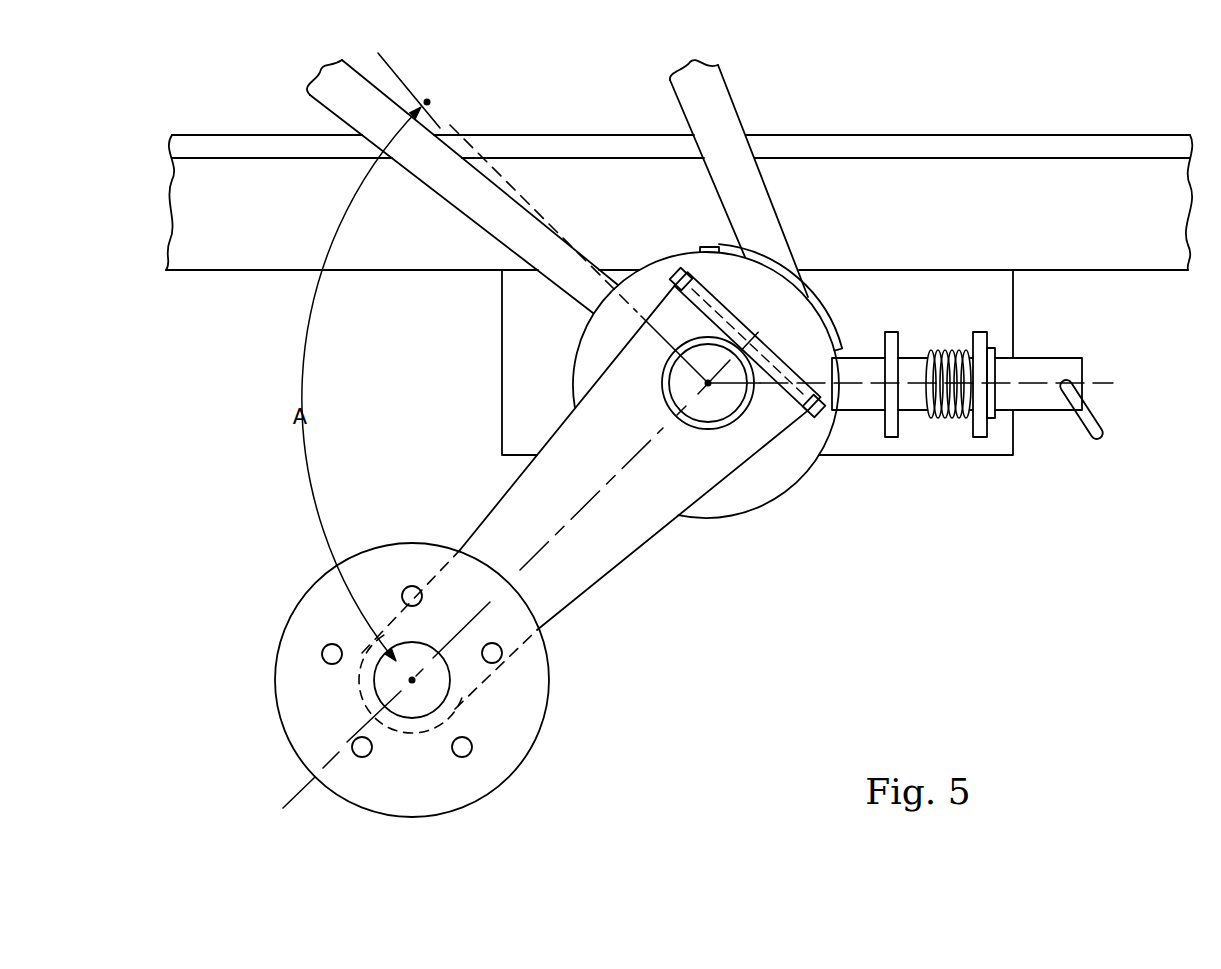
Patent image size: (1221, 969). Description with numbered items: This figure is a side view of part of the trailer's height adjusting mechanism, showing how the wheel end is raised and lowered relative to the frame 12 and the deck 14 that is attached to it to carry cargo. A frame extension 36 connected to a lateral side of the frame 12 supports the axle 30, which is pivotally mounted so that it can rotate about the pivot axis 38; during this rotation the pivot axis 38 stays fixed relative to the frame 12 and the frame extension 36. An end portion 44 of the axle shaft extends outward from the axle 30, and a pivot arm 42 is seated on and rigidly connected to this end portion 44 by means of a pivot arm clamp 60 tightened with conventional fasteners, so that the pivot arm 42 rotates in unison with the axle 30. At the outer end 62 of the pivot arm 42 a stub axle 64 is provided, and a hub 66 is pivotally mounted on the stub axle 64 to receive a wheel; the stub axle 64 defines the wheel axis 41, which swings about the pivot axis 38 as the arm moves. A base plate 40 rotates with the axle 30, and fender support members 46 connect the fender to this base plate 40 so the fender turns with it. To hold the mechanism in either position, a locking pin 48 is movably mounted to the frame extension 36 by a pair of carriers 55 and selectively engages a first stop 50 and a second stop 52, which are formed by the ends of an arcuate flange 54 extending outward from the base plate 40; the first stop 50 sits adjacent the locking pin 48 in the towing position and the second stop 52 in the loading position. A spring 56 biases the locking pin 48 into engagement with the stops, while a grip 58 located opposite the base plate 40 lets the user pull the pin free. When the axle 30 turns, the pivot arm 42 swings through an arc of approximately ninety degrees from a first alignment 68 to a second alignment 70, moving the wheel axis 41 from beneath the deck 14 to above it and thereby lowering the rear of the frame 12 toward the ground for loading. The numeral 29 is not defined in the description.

The frame 12 is at (251, 271).
The deck 14 is at (193, 135).
The bushing 29 is at (703, 428).
The axle 30 is at (790, 511).
The frame extension 36 is at (500, 368).
The pivot axis 38 is at (688, 376).
The base plate 40 is at (818, 465).
The wheel axis 41 is at (418, 681).
The pivot arm 42 is at (617, 566).
The end portion 44 is at (721, 410).
The fender support member 46 is at (323, 105).
The locking pin 48 is at (882, 357).
The first stop 50 is at (838, 352).
The second stop 52 is at (714, 251).
The arcuate flange 54 is at (832, 306).
The carrier 55 is at (886, 440).
The spring 56 is at (946, 350).
The grip 58 is at (1103, 417).
The pivot arm clamp 60 is at (670, 298).
The outer end 62 is at (358, 692).
The stub axle 64 is at (400, 717).
The hub 66 is at (540, 730).
The first alignment 68 is at (283, 808).
The second alignment 70 is at (406, 81).